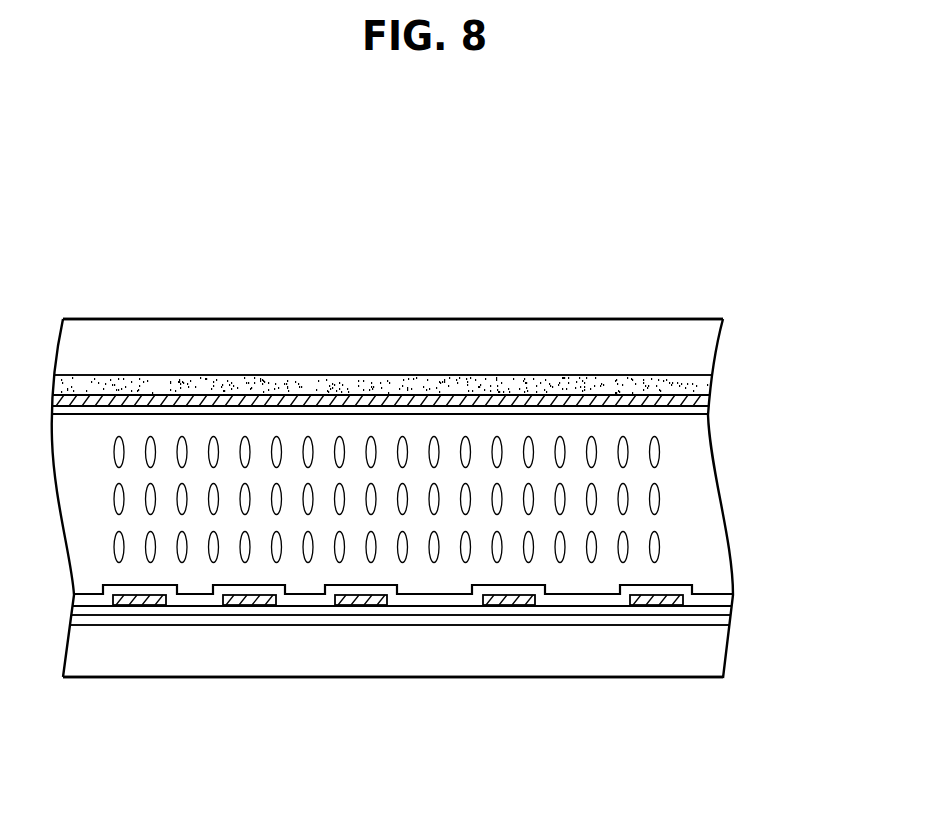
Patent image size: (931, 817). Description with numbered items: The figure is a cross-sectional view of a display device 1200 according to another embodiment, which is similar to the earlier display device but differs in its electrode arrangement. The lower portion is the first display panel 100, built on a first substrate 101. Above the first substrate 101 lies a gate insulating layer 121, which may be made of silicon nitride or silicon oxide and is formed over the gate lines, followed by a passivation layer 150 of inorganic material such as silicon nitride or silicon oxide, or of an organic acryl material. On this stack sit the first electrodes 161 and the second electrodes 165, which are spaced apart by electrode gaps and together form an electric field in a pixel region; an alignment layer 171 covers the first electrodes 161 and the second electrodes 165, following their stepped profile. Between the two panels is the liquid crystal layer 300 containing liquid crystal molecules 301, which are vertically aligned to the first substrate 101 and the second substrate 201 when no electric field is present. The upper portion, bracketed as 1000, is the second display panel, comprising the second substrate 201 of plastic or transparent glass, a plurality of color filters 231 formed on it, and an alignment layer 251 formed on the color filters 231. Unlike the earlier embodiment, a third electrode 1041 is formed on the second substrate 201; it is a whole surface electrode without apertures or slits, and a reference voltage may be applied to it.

The display device 1200 is at (668, 272).
The upper display panel 1000 is at (427, 334).
The second substrate 201 is at (423, 332).
The color filters 231 is at (338, 387).
The third electrode 1041 is at (497, 393).
The alignment layer 251 is at (267, 410).
The liquid crystal layer 300 is at (451, 504).
The liquid crystal molecules 301 is at (684, 553).
The first display panel 100 is at (426, 664).
The alignment layer 171 is at (202, 596).
The second electrodes 165 is at (135, 607).
The first electrodes 161 is at (250, 607).
The passivation layer 150 is at (312, 614).
The gate insulating layer 121 is at (438, 619).
The first substrate 101 is at (583, 667).